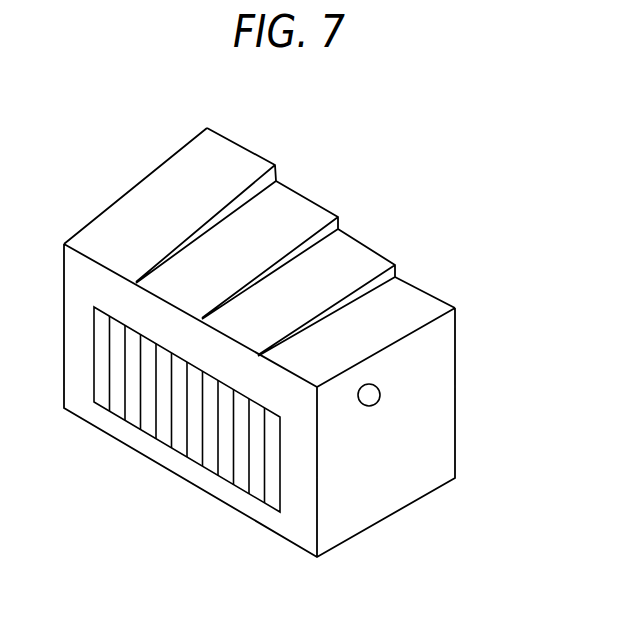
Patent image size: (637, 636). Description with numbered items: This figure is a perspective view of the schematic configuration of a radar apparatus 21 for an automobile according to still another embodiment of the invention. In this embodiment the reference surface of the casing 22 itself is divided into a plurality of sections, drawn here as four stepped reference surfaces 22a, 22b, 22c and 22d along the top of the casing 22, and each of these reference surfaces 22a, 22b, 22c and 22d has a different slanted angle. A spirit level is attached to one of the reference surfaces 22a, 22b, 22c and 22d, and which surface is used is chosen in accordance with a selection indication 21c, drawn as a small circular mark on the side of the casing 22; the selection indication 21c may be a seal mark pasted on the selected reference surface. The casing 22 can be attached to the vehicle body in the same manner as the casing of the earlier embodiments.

The radar apparatus 21 is at (121, 145).
The selection indication 21c is at (374, 397).
The casing 22 is at (347, 272).
The reference surface 22a is at (232, 170).
The reference surface 22b is at (302, 217).
The reference surface 22c is at (365, 262).
The reference surface 22d is at (415, 302).